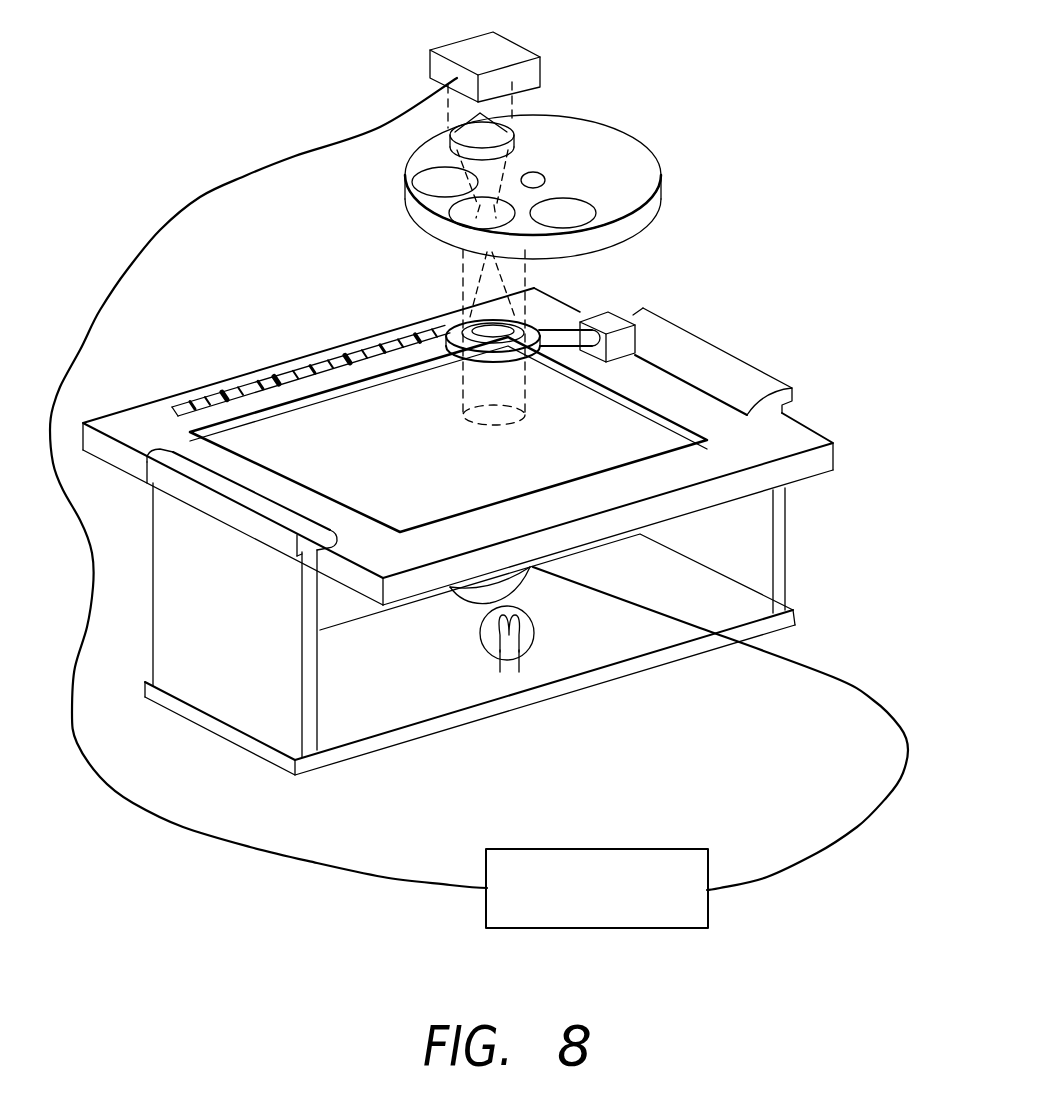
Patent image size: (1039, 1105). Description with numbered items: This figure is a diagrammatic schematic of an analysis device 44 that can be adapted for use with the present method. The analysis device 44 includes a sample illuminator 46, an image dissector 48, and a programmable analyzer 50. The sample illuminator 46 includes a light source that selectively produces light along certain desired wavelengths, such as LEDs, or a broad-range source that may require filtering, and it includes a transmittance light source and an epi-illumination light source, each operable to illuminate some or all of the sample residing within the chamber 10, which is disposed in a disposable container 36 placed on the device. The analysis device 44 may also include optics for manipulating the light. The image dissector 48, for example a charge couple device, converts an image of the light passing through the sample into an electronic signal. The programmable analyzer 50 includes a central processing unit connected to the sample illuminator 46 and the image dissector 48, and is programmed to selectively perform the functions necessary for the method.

The chamber 10 is at (305, 424).
The disposable container 36 is at (800, 425).
The analysis device 44 is at (781, 137).
The sample illuminator 46 is at (533, 648).
The image dissector 48 is at (538, 55).
The programmable analyzer 50 is at (708, 850).